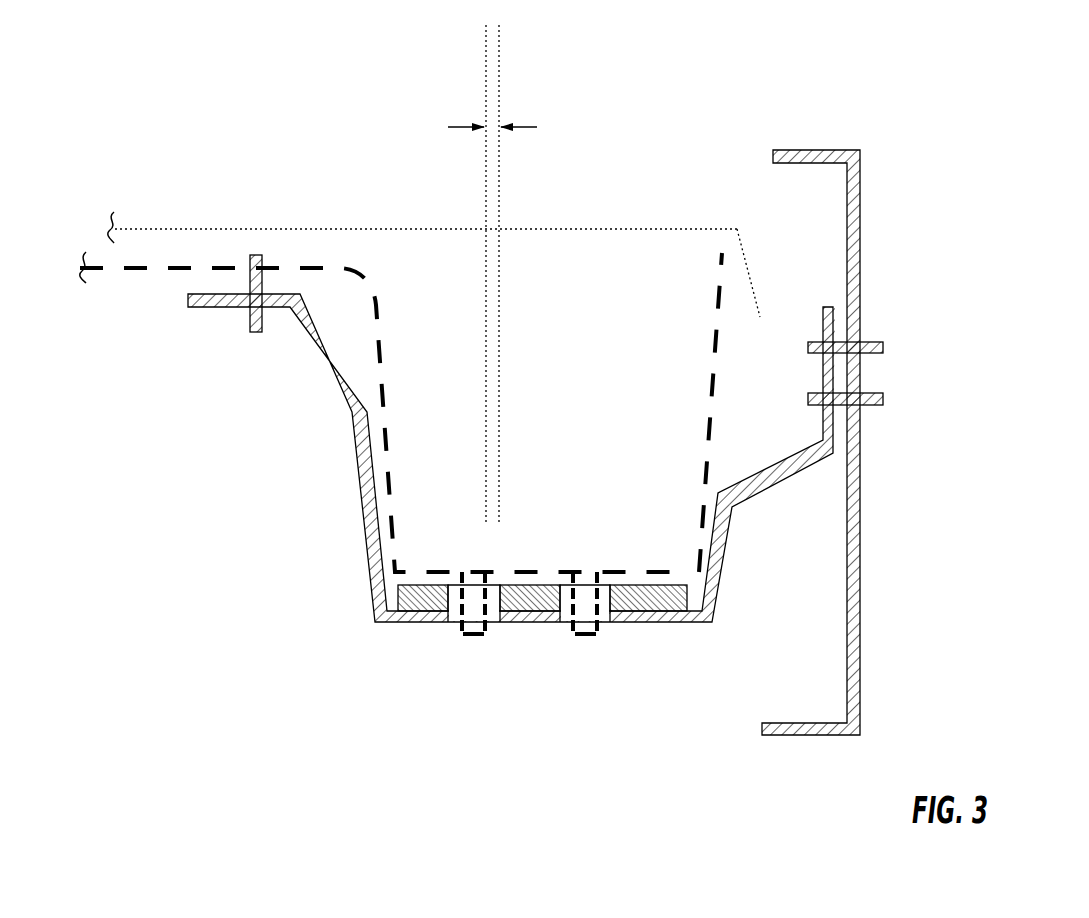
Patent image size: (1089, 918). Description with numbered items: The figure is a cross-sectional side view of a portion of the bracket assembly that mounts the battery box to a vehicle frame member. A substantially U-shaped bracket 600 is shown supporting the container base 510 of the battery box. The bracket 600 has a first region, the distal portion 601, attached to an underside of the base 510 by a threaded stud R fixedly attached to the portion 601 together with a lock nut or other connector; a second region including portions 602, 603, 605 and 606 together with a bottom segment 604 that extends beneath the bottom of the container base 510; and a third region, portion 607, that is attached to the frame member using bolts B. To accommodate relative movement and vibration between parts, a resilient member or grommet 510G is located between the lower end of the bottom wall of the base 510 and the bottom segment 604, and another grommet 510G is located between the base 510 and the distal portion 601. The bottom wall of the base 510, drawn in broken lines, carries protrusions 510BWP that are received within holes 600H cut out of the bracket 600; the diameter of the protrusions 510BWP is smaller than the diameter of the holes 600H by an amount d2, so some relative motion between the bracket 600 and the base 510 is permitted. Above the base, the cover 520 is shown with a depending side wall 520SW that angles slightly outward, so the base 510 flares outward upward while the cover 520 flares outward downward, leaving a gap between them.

The bracket 600 is at (397, 729).
The distal portion 601 is at (215, 305).
The portion 602 is at (330, 362).
The portion 603 is at (362, 495).
The bottom segment 604 is at (538, 628).
The portion 605 is at (722, 572).
The portion 606 is at (766, 489).
The portion 607 is at (822, 418).
The holes 600H is at (612, 632).
The resilient member or grommet 510G is at (441, 603).
The base 510 is at (182, 264).
The protrusions 510BWP is at (588, 645).
The threaded stud R is at (253, 337).
The cover 520 is at (305, 226).
The depending side wall 520SW is at (747, 262).
The amount d2 is at (498, 110).
The bolts B is at (892, 388).